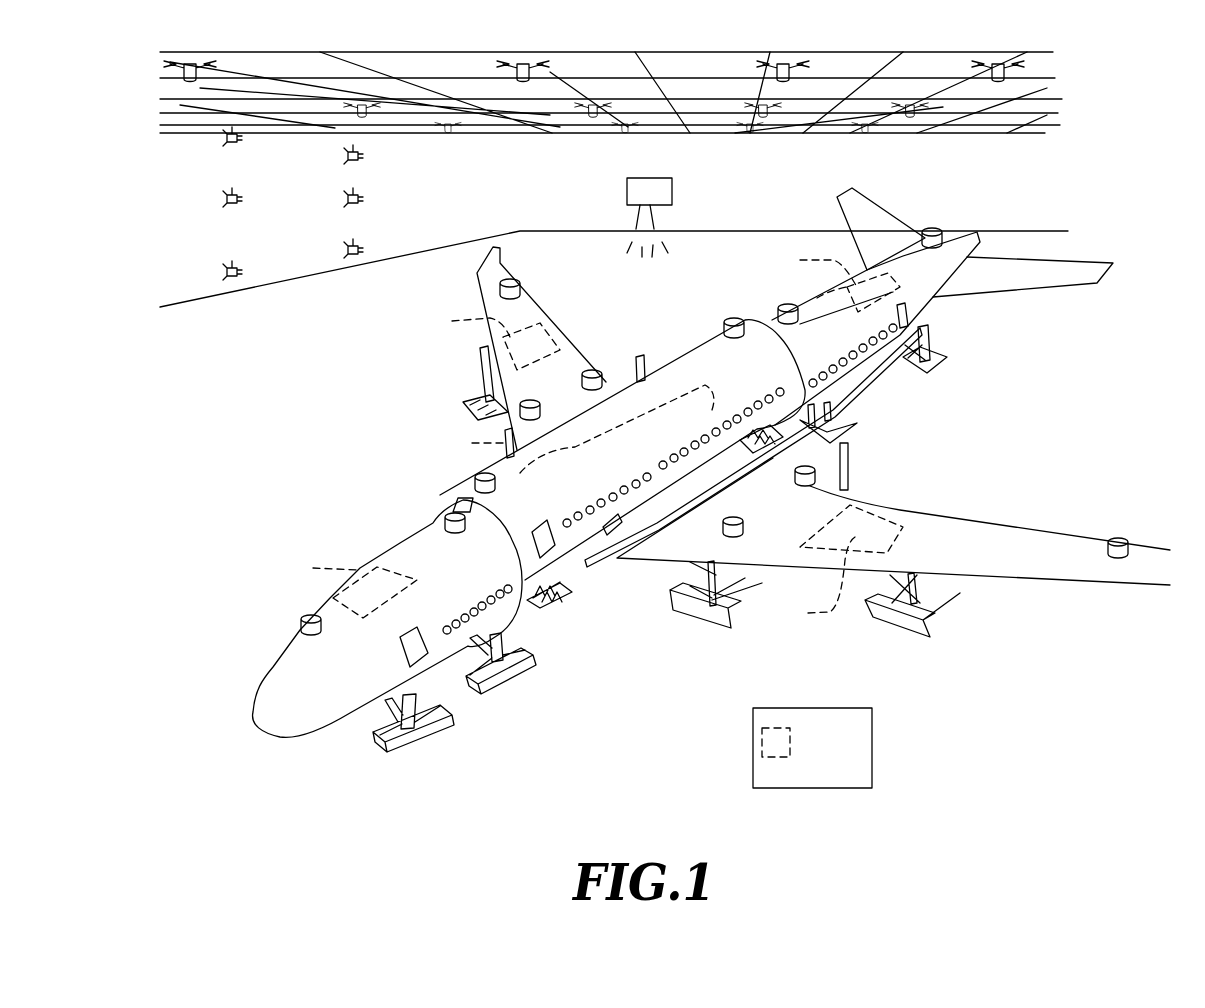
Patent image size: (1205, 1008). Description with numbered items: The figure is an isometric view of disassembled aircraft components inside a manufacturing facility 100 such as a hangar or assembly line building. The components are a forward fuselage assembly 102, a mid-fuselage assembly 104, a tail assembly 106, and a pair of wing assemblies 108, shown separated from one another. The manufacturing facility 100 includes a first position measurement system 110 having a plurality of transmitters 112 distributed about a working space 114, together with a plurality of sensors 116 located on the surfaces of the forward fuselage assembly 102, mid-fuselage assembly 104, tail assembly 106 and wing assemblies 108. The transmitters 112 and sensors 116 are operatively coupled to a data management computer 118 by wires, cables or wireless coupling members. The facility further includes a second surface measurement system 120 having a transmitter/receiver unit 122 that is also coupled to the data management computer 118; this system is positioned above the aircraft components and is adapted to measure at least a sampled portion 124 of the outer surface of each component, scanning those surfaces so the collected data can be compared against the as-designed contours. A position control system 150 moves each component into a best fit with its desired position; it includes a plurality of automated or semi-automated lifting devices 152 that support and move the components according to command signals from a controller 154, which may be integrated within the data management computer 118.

The manufacturing facility 100 is at (1118, 138).
The forward fuselage assembly 102 is at (350, 714).
The mid-fuselage assembly 104 is at (578, 556).
The tail assembly 106 is at (980, 273).
The wing assemblies 108 is at (488, 263).
The first position measurement system 110 is at (258, 345).
The transmitters 112 is at (760, 72).
The working space 114 is at (382, 341).
The sensors 116 is at (513, 283).
The data management computer 118 is at (872, 746).
The second surface measurement system 120 is at (617, 173).
The transmitter/receiver unit 122 is at (660, 178).
The sampled portion 124 is at (590, 438).
The position control system 150 is at (608, 766).
The lifting devices 152 is at (470, 403).
The controller 154 is at (763, 742).